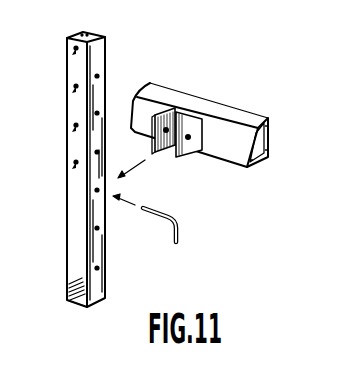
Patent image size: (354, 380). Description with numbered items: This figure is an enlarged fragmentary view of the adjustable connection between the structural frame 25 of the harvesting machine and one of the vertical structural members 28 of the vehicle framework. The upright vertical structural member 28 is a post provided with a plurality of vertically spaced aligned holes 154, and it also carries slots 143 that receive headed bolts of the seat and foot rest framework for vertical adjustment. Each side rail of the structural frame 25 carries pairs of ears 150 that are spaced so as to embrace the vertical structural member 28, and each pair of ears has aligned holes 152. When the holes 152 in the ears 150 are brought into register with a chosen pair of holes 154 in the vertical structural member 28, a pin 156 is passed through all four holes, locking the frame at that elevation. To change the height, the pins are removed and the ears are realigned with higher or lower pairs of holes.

The structural frame 25 is at (238, 113).
The vertical structural member 28 is at (70, 246).
The slots 143 is at (72, 85).
The ears 150 is at (182, 160).
The holes 152 is at (188, 141).
The holes 154 is at (98, 111).
The pin 156 is at (180, 232).